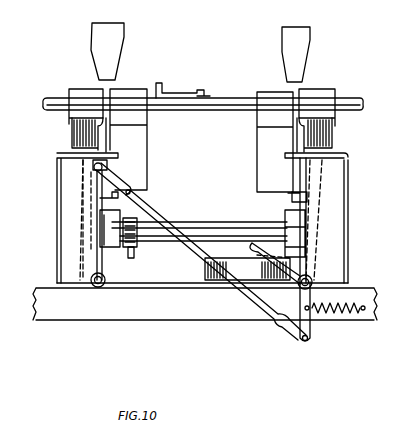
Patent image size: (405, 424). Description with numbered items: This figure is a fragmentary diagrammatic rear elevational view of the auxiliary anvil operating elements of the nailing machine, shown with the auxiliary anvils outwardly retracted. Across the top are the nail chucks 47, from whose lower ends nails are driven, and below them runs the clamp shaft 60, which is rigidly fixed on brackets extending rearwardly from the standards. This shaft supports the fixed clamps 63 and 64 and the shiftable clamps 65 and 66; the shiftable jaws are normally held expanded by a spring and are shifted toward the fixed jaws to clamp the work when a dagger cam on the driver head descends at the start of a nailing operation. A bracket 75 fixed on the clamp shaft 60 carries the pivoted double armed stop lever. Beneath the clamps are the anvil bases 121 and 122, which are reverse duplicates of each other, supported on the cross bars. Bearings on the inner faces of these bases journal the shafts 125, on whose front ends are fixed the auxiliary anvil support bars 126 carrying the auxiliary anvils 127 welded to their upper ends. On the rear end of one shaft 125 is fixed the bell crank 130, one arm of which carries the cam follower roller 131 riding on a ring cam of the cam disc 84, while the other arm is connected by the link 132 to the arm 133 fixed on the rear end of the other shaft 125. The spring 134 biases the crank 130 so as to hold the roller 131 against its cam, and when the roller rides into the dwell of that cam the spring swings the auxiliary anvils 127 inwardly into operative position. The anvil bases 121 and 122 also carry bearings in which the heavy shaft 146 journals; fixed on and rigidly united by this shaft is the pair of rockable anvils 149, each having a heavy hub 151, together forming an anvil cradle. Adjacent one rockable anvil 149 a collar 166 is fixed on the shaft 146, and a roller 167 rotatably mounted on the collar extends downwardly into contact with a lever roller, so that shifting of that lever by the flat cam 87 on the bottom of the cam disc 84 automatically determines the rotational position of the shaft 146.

The nail chuck 47 is at (118, 67).
The clamp shaft 60 is at (356, 100).
The fixed clamp 63 is at (322, 97).
The fixed clamp 64 is at (148, 142).
The shiftable clamp 65 is at (258, 150).
The shiftable clamp 66 is at (79, 136).
The bracket 75 is at (163, 92).
The cam disc 84 is at (212, 265).
The flat cam 87 is at (222, 278).
The anvil base 121 is at (67, 193).
The anvil base 122 is at (348, 192).
The shaft 125 is at (92, 287).
The auxiliary anvil support bar 126 is at (82, 202).
The auxiliary anvil 127 is at (80, 146).
The crank 130 is at (310, 328).
The cam follower roller 131 is at (244, 243).
The link 132 is at (257, 300).
The arm 133 is at (95, 223).
The spring 134 is at (347, 303).
The heavy shaft 146 is at (202, 226).
The rockable anvil 149 is at (112, 250).
The hub 151 is at (286, 217).
The collar 166 is at (134, 222).
The roller 167 is at (126, 259).